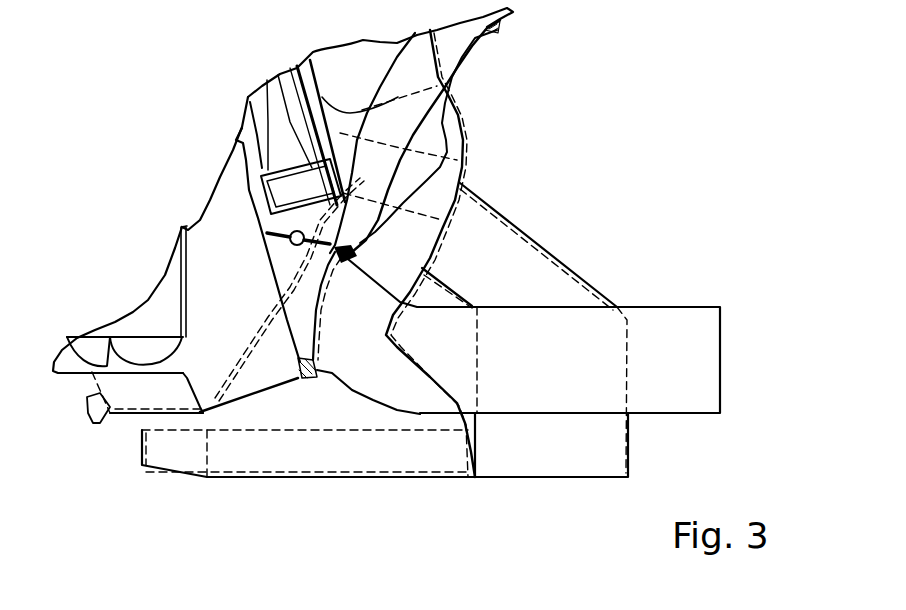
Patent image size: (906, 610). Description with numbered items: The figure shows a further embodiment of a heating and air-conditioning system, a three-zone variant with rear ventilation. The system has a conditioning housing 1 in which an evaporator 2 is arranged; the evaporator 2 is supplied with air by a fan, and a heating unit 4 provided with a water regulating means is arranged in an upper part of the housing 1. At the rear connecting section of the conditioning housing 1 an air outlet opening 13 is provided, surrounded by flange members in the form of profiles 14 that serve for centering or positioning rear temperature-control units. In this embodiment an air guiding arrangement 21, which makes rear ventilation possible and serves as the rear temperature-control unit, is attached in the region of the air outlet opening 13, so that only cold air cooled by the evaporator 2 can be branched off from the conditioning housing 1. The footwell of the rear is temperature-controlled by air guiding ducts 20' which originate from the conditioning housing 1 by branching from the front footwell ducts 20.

The conditioning housing 1 is at (470, 80).
The evaporator 2 is at (137, 312).
The heating unit 4 is at (258, 106).
The air outlet opening 13 is at (308, 347).
The profiles 14 is at (502, 28).
The front footwell ducts 20 is at (308, 453).
The air guiding ducts 20' is at (551, 422).
The air guiding arrangement 21 is at (553, 300).